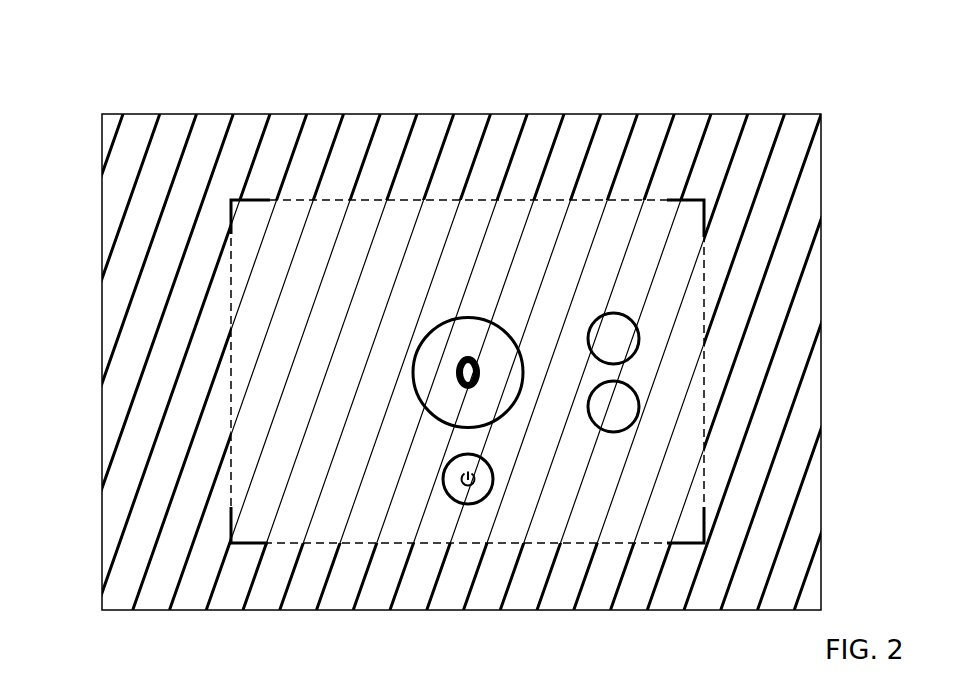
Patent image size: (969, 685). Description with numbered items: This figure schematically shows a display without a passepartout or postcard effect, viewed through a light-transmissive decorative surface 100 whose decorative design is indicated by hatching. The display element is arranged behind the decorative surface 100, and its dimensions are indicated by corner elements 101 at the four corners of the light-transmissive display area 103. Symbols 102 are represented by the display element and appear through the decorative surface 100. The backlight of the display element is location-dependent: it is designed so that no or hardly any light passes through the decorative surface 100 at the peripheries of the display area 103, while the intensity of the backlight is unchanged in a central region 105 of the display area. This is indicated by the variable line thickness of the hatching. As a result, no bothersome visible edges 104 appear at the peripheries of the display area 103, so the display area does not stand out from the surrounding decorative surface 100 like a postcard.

The decorative surface 100 is at (719, 130).
The corner elements 101 is at (256, 200).
The symbols 102 is at (415, 358).
The display area 103 is at (473, 219).
The visible edges 104 is at (704, 384).
The central region 105 is at (370, 408).